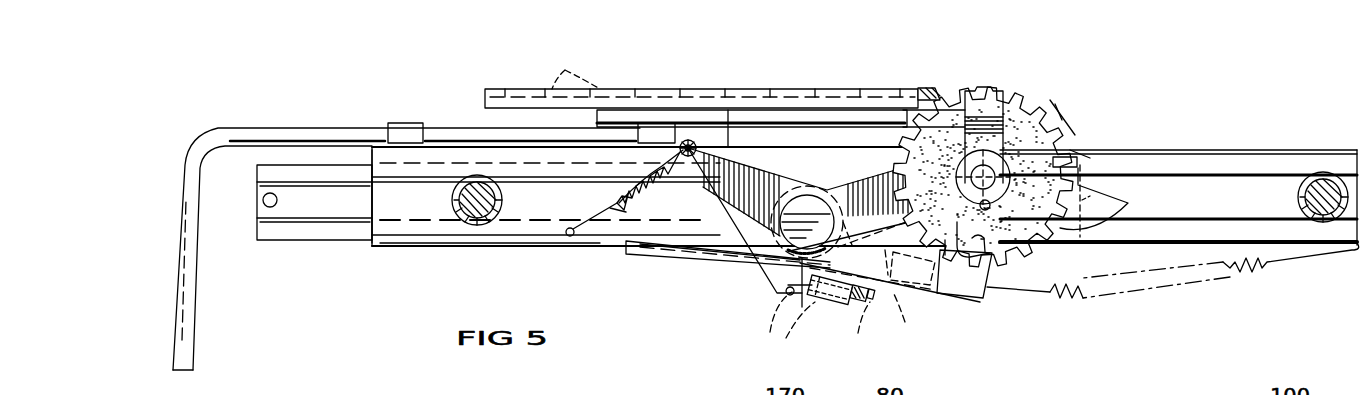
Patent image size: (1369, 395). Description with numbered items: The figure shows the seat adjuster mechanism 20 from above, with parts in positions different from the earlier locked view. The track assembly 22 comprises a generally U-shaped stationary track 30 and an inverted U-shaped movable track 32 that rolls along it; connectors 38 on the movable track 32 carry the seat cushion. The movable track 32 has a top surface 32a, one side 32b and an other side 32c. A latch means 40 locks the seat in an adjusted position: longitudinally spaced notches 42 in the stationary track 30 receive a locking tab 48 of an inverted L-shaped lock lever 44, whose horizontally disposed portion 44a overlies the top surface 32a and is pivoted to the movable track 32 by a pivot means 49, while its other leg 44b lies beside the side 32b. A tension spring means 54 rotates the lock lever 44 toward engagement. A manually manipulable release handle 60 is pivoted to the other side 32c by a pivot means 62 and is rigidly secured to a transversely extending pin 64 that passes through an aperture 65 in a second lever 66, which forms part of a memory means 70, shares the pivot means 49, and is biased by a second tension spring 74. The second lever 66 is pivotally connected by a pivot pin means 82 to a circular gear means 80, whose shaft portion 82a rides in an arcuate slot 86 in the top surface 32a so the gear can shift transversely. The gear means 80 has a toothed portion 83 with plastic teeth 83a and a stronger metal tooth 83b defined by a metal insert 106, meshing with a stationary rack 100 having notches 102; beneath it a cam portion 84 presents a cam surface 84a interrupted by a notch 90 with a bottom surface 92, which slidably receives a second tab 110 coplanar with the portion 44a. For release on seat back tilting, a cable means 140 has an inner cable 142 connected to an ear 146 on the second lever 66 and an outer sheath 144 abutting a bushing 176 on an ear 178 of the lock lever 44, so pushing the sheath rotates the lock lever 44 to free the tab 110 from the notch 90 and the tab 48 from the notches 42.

The seat adjuster mechanism 20 is at (678, 185).
The track assembly 22 is at (1214, 145).
The stationary track 30 is at (275, 243).
The movable track 32 is at (484, 252).
The top surface 32a is at (390, 217).
The side 32b is at (436, 252).
The other side 32c is at (743, 150).
The connectors 38 is at (477, 200).
The latch means 40 is at (925, 304).
The notches 42 is at (895, 237).
The lock lever 44 is at (718, 237).
The horizontally disposed portion 44a is at (677, 254).
The other leg 44b is at (728, 264).
The locking tab 48 is at (916, 290).
The pivot means 49 is at (805, 214).
The tension spring means 54 is at (1250, 272).
The release handle 60 is at (197, 158).
The pivot means 62 is at (398, 128).
The pin 64 is at (686, 140).
The aperture 65 is at (695, 142).
The second lever 66 is at (844, 195).
The memory means 70 is at (1012, 151).
The second tension spring 74 is at (600, 232).
The gear means 80 is at (1008, 86).
The pivot pin means 82 is at (966, 150).
The shaft portion 82a is at (1060, 163).
The toothed portion 83 is at (1062, 133).
The teeth 83a is at (925, 88).
The metal tooth 83b is at (978, 87).
The cam portion 84 is at (1090, 160).
The cam surface 84a is at (1052, 106).
The arcuate slot 86 is at (1096, 206).
The notch 90 is at (1006, 260).
The bottom surface 92 is at (994, 203).
The stationary rack 100 is at (500, 86).
The notches 102 is at (572, 68).
The metal insert 106 is at (960, 118).
The second tab 110 is at (990, 280).
The cable means 140 is at (836, 320).
The inner cable 142 is at (898, 310).
The outer sheath 144 is at (853, 303).
The ear 146 is at (770, 318).
The bushing 176 is at (829, 305).
The ear 178 is at (800, 306).